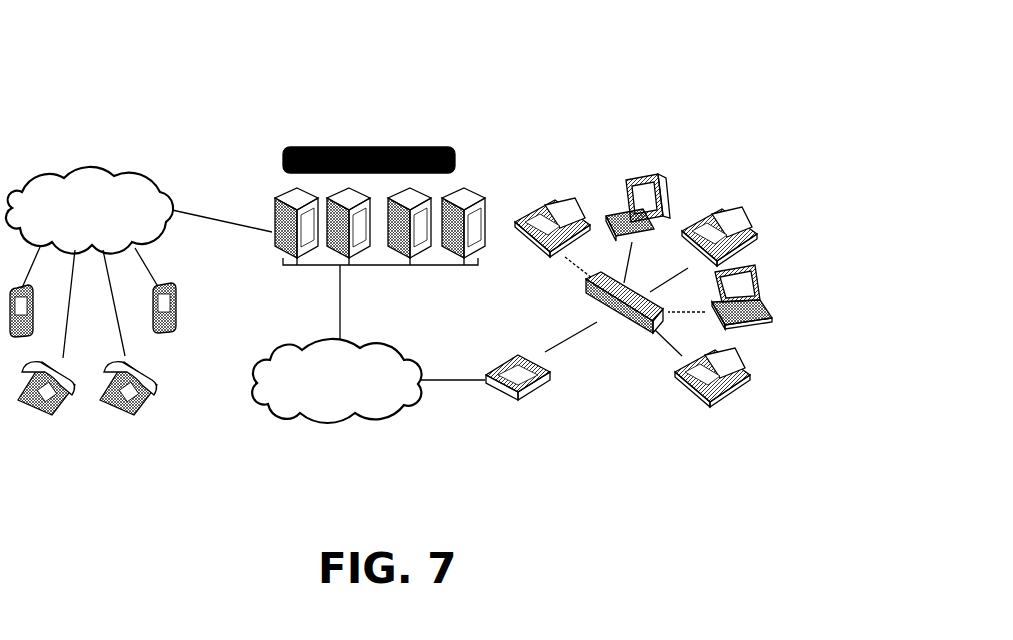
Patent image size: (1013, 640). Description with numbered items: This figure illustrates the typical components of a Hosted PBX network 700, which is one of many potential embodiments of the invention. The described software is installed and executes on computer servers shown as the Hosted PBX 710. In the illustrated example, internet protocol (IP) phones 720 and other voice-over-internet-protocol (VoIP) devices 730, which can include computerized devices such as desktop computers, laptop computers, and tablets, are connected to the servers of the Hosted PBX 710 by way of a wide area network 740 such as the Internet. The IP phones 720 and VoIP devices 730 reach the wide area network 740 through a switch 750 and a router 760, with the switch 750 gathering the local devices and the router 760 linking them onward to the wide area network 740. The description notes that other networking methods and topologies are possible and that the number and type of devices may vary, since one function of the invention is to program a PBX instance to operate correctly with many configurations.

The Hosted PBX network 700 is at (115, 54).
The Hosted PBX servers 710 is at (363, 106).
The internet protocol (IP) phones 720 is at (765, 224).
The voice-over-internet-protocol (VoIP) devices 730 is at (645, 155).
The wide area network 740 is at (346, 422).
The switch 750 is at (637, 360).
The router 760 is at (507, 432).